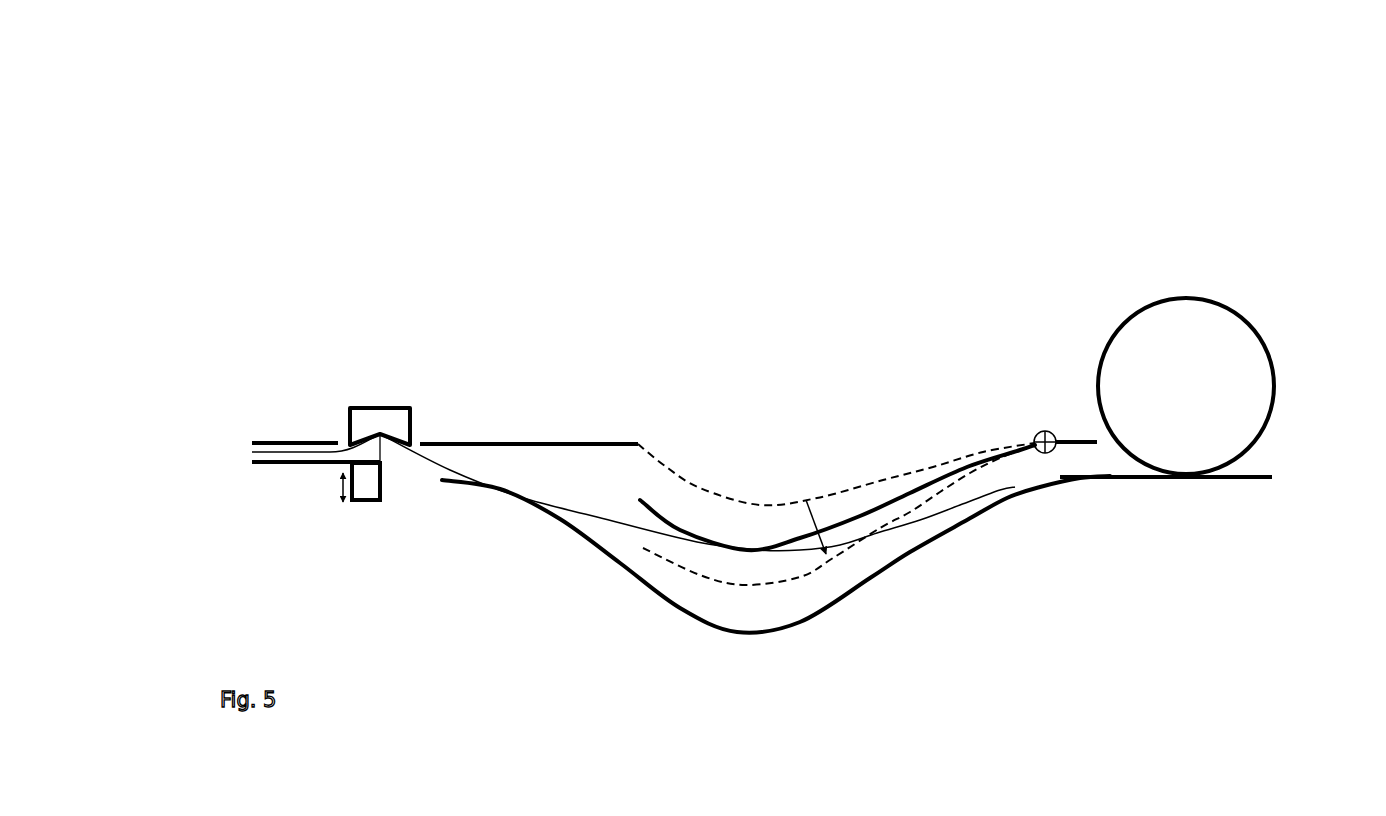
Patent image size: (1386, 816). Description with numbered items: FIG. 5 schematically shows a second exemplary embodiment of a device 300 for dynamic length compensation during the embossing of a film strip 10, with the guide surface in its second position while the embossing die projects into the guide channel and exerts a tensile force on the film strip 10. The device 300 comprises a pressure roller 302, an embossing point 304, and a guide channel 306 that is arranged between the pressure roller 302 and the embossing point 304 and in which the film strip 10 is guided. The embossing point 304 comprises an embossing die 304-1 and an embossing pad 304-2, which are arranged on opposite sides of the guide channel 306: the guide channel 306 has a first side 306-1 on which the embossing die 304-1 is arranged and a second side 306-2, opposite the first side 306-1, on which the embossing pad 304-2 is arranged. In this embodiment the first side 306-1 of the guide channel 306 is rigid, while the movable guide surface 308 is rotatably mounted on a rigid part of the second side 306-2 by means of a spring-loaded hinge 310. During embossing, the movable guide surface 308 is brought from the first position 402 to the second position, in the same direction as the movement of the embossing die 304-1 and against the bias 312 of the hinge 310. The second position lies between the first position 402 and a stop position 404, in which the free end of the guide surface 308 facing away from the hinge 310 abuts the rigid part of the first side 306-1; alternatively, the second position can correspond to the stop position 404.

The device for dynamic length compensation 300 is at (283, 86).
The pressure roller 302 is at (1127, 318).
The embossing point 304 is at (319, 430).
The embossing die 304-1 is at (360, 503).
The embossing pad 304-2 is at (348, 420).
The guide channel 306 is at (234, 457).
The first side of the guide channel 306-1 is at (883, 580).
The second side of the guide channel 306-2 is at (472, 443).
The movable guide surface 308 is at (656, 503).
The spring-loaded hinge 310 is at (1042, 431).
The bias 312 is at (815, 497).
The first position 402 is at (708, 583).
The stop position 404 is at (735, 503).
The film strip 10 is at (1250, 472).